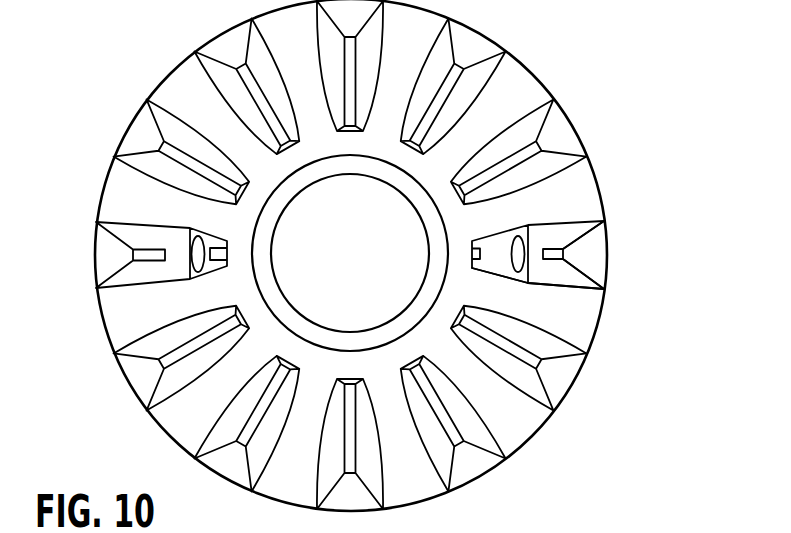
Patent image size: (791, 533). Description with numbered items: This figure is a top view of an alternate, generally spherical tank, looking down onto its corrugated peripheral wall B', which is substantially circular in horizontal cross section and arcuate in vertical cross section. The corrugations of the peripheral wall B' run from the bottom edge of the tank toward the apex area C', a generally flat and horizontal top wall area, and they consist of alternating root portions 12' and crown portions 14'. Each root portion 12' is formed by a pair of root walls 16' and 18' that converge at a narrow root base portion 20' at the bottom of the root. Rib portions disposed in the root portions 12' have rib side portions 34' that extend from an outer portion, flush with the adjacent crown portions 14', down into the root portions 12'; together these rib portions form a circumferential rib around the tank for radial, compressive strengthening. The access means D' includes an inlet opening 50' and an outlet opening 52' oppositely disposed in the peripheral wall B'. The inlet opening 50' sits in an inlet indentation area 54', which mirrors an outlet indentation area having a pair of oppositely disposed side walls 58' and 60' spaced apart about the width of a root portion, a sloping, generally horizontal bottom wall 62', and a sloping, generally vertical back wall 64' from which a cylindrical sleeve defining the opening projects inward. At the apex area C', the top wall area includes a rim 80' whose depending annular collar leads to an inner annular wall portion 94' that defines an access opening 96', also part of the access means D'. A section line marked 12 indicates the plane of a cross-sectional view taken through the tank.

The root portions 12' is at (92, 357).
The crown portions 14' is at (318, 255).
The root wall 16' is at (187, 349).
The root wall 18' is at (141, 410).
The root base portion 20' is at (121, 383).
The rib side portion 34' is at (524, 358).
The inlet opening 50' is at (119, 240).
The outlet opening 52' is at (589, 236).
The inlet indentation area 54' is at (130, 227).
The indentation area side wall 58' is at (614, 202).
The indentation area side wall 60' is at (614, 274).
The bottom wall 62' is at (597, 309).
The back wall 64' is at (514, 291).
The rim 80' is at (439, 361).
The inner annular wall portion 94' is at (376, 253).
The access opening 96' is at (350, 253).
The section line 12- 12 is at (175, 349).
The peripheral wall B' is at (99, 94).
The apex area C' is at (472, 304).
The access means D' is at (407, 186).